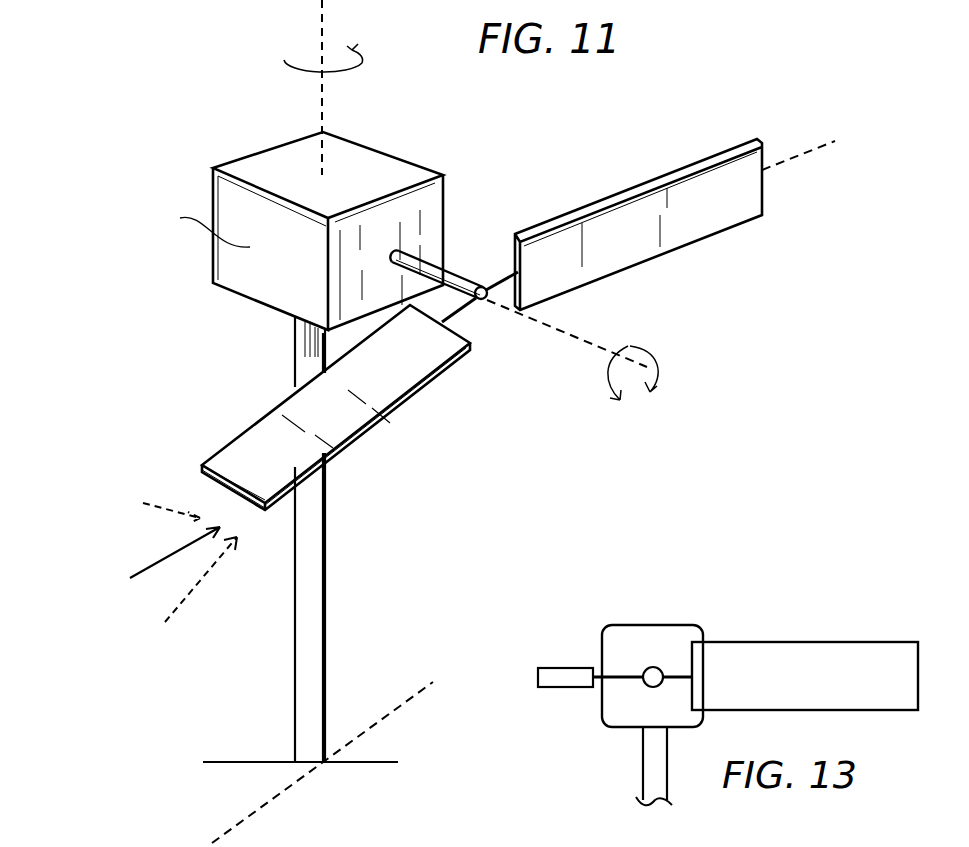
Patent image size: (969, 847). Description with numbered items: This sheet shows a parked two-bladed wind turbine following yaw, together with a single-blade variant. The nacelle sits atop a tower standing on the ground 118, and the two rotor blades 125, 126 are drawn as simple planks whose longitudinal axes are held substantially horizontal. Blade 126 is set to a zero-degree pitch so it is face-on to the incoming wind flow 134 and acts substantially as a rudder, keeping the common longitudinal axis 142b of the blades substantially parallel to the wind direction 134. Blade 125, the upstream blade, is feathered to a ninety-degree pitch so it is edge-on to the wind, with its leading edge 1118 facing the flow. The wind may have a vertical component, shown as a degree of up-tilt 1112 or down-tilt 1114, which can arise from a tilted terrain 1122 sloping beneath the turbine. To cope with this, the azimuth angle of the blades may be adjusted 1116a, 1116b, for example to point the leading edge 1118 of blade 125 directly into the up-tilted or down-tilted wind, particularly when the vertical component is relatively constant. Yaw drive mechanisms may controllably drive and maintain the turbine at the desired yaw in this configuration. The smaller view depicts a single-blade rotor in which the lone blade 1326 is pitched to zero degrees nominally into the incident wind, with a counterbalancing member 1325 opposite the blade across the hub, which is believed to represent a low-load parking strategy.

In FIG. 11, the ground 118 is at (273, 762).
In FIG. 11, the tilted terrain 1122 is at (253, 812).
In FIG. 11, the rotor blade 125 is at (258, 445).
In FIG. 11, the leading edge 1118 is at (248, 502).
In FIG. 11, the rotor blade 126 is at (711, 188).
In FIG. 11, the common longitudinal axis of the blades 142b is at (793, 160).
In FIG. 11, the azimuth angle adjustment 1116a is at (655, 373).
In FIG. 11, the azimuth angle adjustment 1116b is at (608, 373).
In FIG. 11, the down-tilt 1114 is at (143, 503).
In FIG. 11, the wind flow 134 is at (147, 568).
In FIG. 11, the up-tilt 1112 is at (188, 602).
In FIG. 13, the counterweight 1325 is at (553, 668).
In FIG. 13, the blade 1326 is at (768, 642).